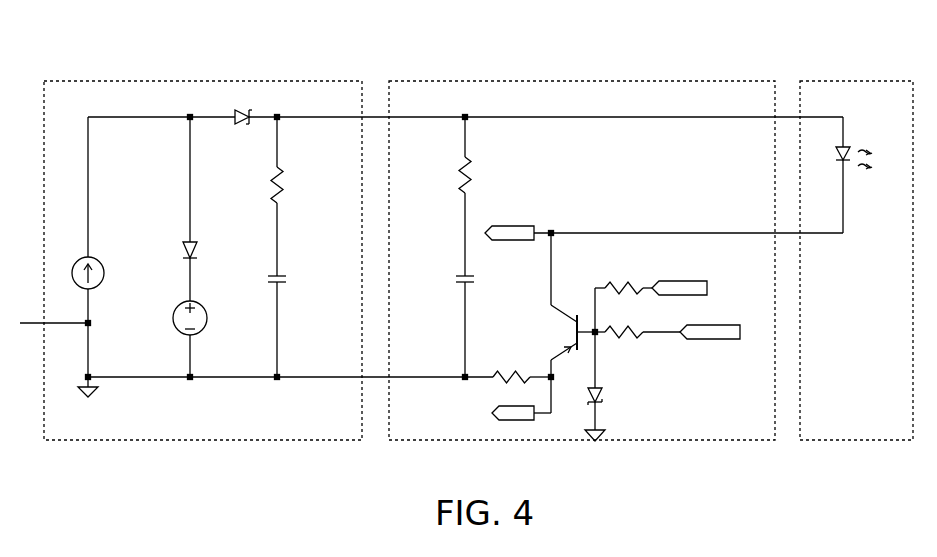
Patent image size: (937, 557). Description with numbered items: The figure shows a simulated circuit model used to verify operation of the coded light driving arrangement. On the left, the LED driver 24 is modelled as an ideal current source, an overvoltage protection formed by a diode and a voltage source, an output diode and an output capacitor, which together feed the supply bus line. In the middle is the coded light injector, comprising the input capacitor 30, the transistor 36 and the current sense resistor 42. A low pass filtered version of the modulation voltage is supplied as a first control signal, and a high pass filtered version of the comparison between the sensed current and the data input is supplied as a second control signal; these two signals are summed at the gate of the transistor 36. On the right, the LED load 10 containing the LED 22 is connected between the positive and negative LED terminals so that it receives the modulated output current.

The LED load 10 is at (846, 252).
The LED load 22 is at (843, 147).
The LED driver 24 is at (262, 440).
The input capacitor 30 is at (594, 261).
The transistor 36 is at (566, 315).
The current sense resistor 42 is at (503, 382).